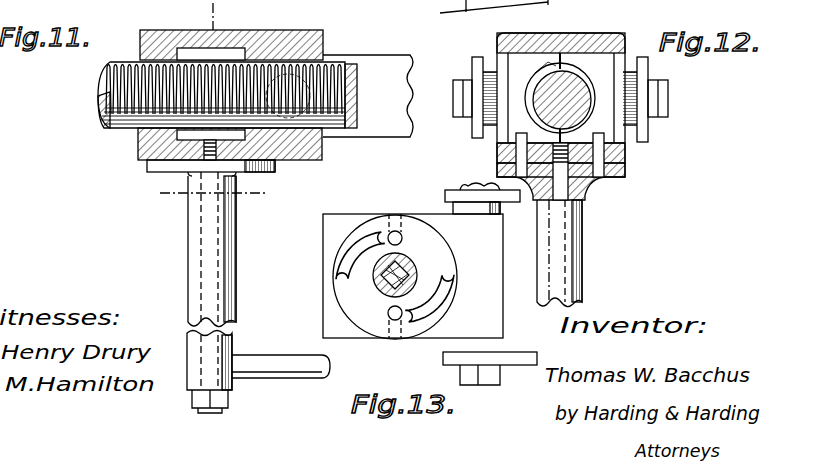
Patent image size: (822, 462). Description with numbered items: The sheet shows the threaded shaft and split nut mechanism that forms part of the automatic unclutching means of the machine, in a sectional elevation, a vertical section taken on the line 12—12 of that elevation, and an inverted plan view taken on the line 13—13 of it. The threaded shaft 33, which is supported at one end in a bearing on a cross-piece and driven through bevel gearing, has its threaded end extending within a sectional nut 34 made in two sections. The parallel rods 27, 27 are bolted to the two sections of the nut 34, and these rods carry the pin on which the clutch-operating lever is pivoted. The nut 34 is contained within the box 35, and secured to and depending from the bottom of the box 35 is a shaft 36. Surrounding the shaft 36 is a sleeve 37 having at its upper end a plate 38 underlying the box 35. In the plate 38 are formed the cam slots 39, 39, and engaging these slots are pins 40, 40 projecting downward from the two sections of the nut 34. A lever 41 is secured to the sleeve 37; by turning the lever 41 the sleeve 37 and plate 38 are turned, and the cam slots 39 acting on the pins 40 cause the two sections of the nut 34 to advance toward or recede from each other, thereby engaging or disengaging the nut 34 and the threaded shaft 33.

In FIG. 11, the section line 12— 12 is at (201, 118).
In FIG. 11, the section line 13— 13 is at (212, 193).
In FIG. 11, the parallel rods 27 is at (368, 96).
In FIG. 12, the parallel rods 27 is at (472, 62).
In FIG. 13, the parallel rods 27 is at (452, 188).
In FIG. 11, the threaded shaft 33 is at (130, 51).
In FIG. 12, the threaded shaft 33 is at (572, 77).
In FIG. 11, the sectional nut 34 is at (221, 55).
In FIG. 12, the sectional nut 34 is at (564, 95).
In FIG. 11, the box 35 is at (315, 31).
In FIG. 12, the box 35 is at (563, 34).
In FIG. 13, the box 35 is at (413, 276).
In FIG. 11, the shaft 36 is at (207, 245).
In FIG. 12, the shaft 36 is at (558, 233).
In FIG. 13, the shaft 36 is at (408, 272).
In FIG. 11, the sleeve 37 is at (190, 283).
In FIG. 12, the sleeve 37 is at (582, 270).
In FIG. 13, the sleeve 37 is at (378, 287).
In FIG. 11, the plate 38 is at (147, 166).
In FIG. 13, the plate 38 is at (342, 296).
In FIG. 13, the cam slots 39 is at (345, 262).
In FIG. 12, the pins 40 is at (516, 153).
In FIG. 13, the pins 40 is at (391, 233).
In FIG. 11, the lever 41 is at (252, 367).